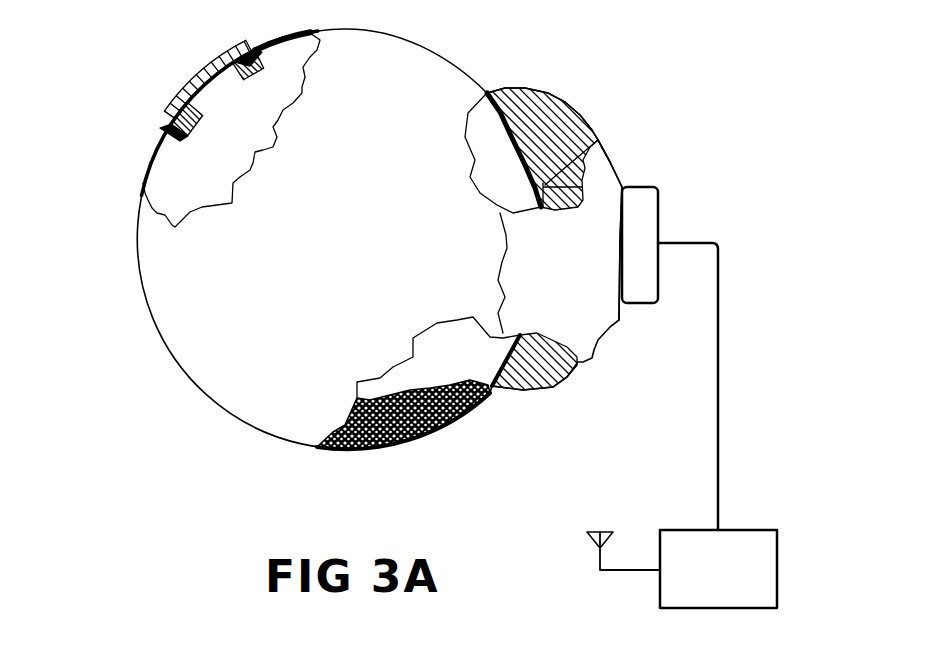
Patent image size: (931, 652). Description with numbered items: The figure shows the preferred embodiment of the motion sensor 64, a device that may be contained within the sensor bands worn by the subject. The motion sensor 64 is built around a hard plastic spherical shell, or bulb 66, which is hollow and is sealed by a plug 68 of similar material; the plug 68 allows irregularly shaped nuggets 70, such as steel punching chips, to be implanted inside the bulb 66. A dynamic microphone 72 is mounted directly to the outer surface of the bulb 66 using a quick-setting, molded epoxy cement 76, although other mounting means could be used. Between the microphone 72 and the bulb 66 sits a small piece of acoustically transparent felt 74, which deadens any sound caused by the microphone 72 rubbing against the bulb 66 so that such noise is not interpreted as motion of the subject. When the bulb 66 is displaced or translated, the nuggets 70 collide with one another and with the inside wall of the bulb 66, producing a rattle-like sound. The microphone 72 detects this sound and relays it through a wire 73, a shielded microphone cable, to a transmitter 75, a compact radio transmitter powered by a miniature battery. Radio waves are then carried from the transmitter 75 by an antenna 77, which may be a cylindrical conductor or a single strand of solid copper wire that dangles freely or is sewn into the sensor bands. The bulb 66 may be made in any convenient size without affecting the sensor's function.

The motion sensor 64 is at (65, 555).
The bulb 66 is at (192, 372).
The plug 68 is at (195, 87).
The nuggets 70 is at (397, 437).
The dynamic microphone 72 is at (650, 205).
The wire 73 is at (718, 363).
The felt 74 is at (590, 145).
The transmitter 75 is at (750, 537).
The epoxy cement 76 is at (523, 97).
The antenna 77 is at (608, 526).